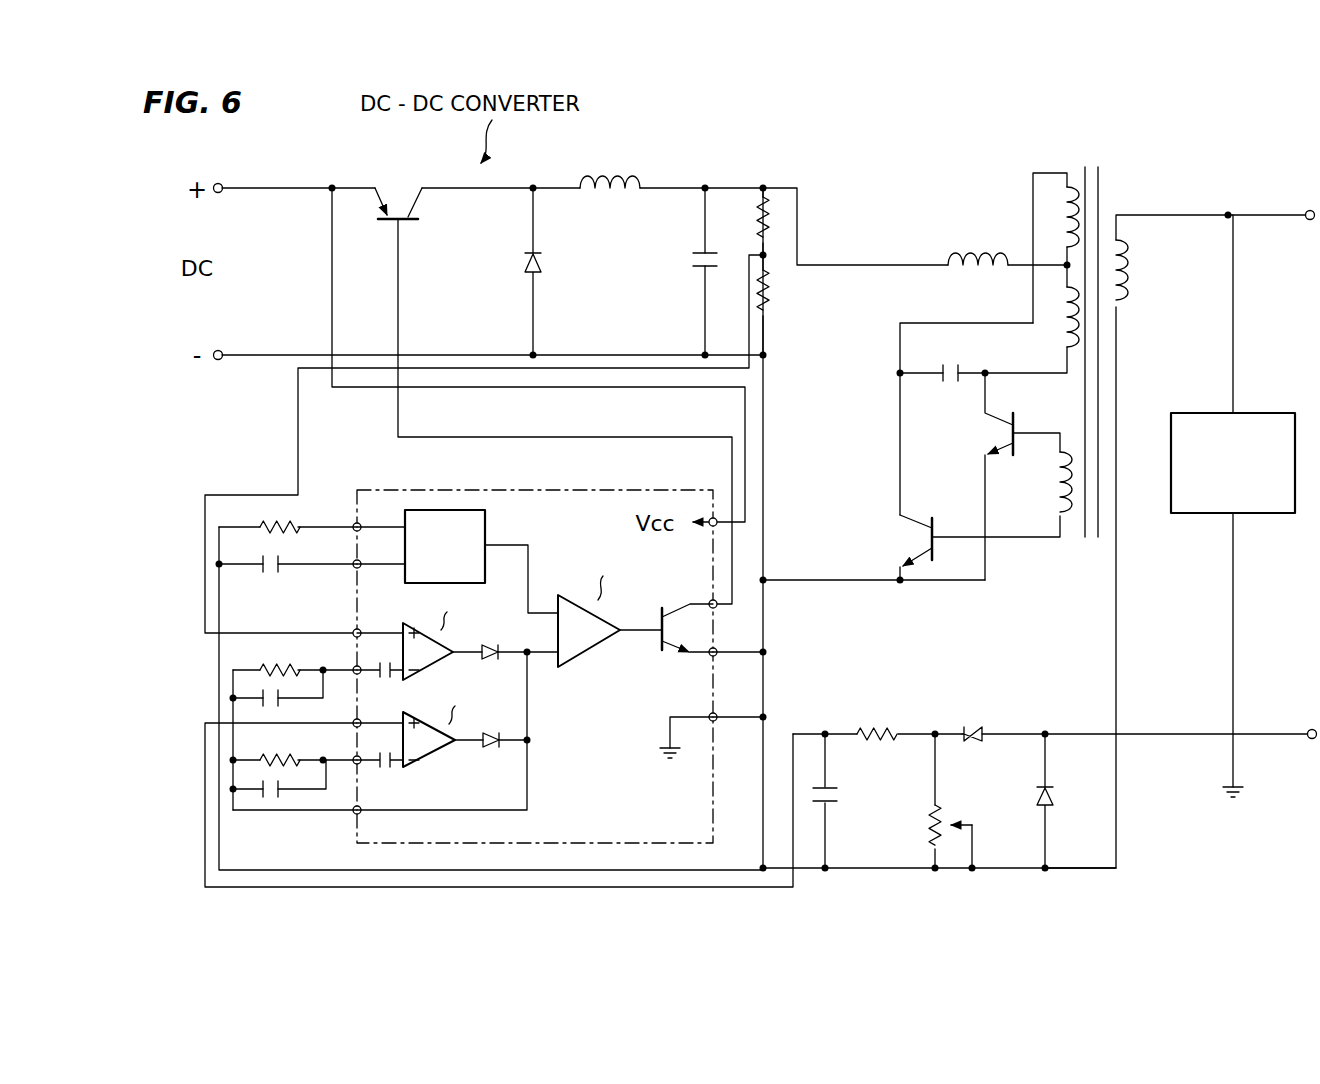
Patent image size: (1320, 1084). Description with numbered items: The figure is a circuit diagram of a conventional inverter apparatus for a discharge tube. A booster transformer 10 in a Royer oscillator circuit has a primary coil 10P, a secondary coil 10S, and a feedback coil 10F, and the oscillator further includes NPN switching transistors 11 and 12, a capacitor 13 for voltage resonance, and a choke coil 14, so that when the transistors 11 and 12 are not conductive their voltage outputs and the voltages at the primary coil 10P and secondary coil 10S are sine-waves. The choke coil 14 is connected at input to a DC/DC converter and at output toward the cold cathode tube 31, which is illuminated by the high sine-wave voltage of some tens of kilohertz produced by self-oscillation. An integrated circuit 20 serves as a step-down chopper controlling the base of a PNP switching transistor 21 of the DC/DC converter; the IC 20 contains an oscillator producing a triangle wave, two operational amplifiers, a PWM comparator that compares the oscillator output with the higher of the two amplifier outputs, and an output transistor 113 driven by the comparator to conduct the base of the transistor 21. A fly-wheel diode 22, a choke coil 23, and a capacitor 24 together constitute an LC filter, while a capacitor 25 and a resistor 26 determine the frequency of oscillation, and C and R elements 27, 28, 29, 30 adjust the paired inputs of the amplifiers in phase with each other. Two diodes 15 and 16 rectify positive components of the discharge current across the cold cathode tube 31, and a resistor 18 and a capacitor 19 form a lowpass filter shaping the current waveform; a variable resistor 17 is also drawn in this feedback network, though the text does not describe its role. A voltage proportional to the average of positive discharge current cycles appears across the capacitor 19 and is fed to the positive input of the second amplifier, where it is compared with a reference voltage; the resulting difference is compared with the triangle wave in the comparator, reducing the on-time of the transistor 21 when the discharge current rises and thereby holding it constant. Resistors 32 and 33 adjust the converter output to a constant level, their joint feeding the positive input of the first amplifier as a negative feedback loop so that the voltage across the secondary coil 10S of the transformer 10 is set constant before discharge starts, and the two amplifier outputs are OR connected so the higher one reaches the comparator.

The booster transformer 10 is at (1123, 466).
The primary coil 10P is at (1043, 170).
The secondary coil 10S is at (1128, 265).
The feedback coil 10F is at (1076, 483).
The NPN switching transistor 11 is at (989, 432).
The NPN switching transistor 12 is at (921, 507).
The capacitor for voltage resonance 13 is at (953, 358).
The choke coil 14 is at (973, 248).
The diode 15 is at (987, 718).
The diode 16 is at (1060, 793).
The variable resistor 17 is at (947, 818).
The resistor 18 is at (885, 720).
The capacitor 19 is at (840, 795).
The integrated circuit 20 is at (558, 708).
The PNP switching transistor 21 is at (393, 188).
The fly-wheel diode 22 is at (547, 264).
The choke coil 23 is at (612, 176).
The capacitor 24 is at (686, 257).
The capacitor 25 is at (272, 583).
The resistor 26 is at (283, 516).
The C element 27 is at (256, 708).
The R element 28 is at (259, 653).
The C element 29 is at (270, 800).
The R element 30 is at (271, 745).
The cold cathode tube 31 is at (1263, 413).
The resistor 32 is at (773, 235).
The resistor 33 is at (778, 290).
The output transistor 113 is at (671, 601).